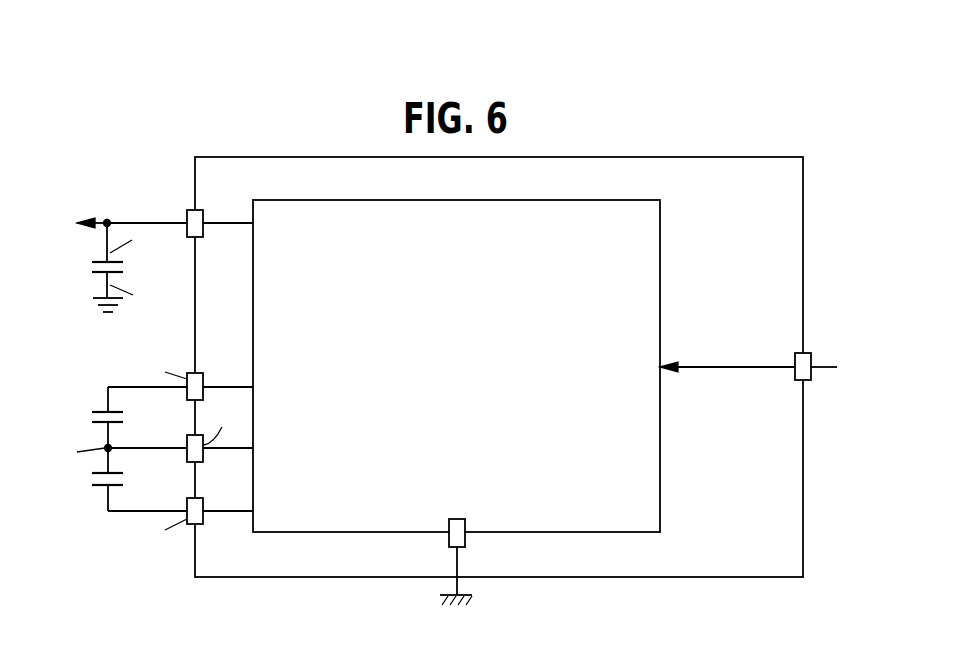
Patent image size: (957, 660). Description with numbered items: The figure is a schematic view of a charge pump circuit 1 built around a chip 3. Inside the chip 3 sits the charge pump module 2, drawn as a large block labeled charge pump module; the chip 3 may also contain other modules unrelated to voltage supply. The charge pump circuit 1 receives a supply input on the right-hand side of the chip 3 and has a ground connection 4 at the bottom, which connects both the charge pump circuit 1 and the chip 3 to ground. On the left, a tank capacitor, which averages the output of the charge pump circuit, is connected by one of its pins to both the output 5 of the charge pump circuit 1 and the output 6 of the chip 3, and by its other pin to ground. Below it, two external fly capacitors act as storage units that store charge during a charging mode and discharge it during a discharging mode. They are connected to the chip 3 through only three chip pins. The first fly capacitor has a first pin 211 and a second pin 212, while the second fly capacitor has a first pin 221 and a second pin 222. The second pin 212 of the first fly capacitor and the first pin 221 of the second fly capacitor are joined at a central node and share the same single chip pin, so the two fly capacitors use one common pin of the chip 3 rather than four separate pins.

The charge pump circuit 1 is at (790, 62).
The charge pump module 2 is at (304, 200).
The chip 3 is at (722, 157).
The ground connection 4 is at (458, 562).
The output of the charge pump circuit 5 is at (104, 219).
The output of the chip 6 is at (145, 222).
The first pin of the first fly capacitor 211 is at (106, 394).
The second pin of the first fly capacitor 212 is at (106, 434).
The first pin of the second fly capacitor 221 is at (106, 461).
The second pin of the second fly capacitor 222 is at (106, 505).